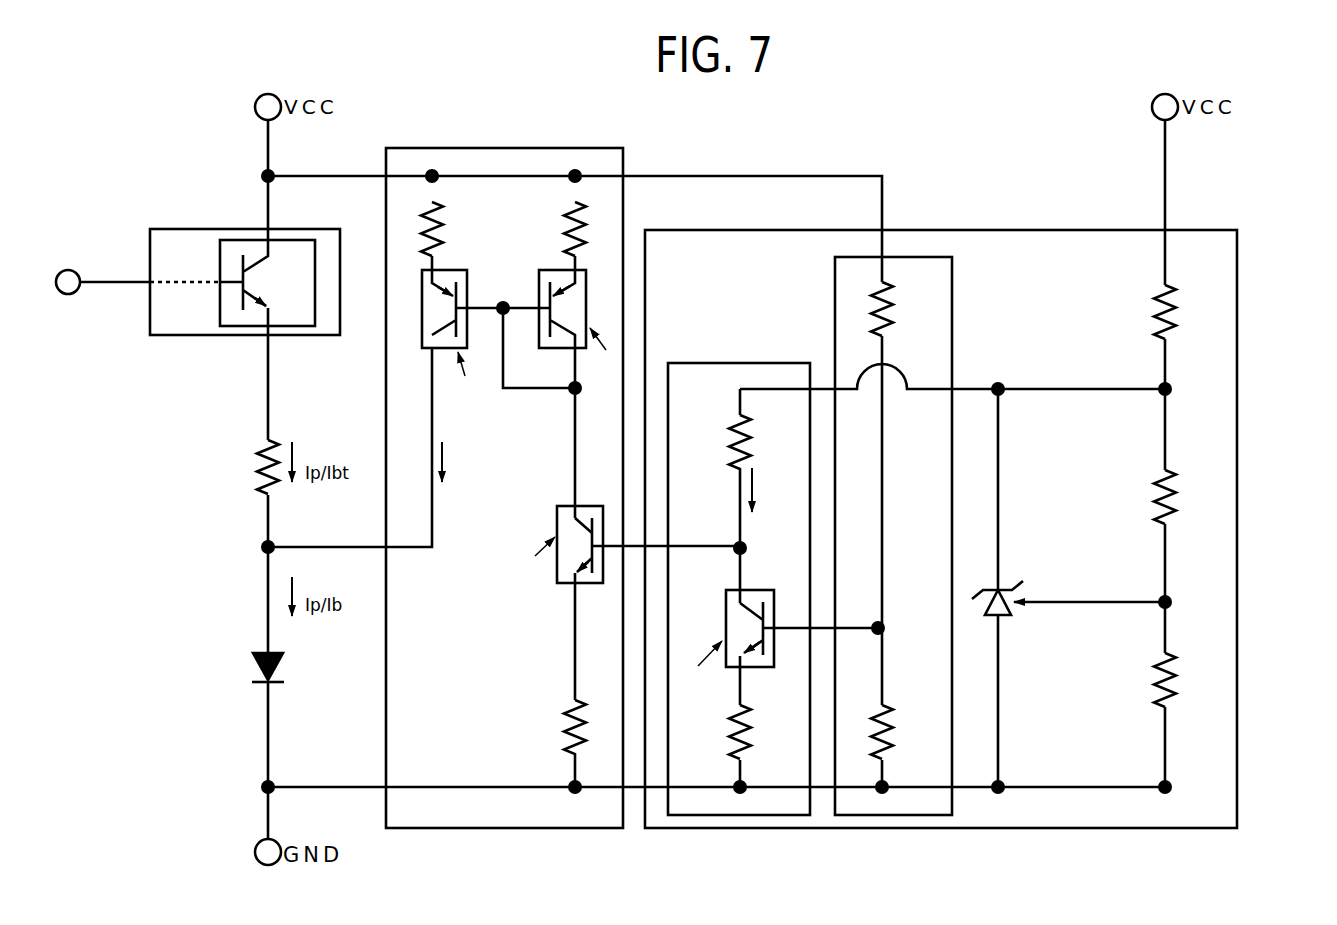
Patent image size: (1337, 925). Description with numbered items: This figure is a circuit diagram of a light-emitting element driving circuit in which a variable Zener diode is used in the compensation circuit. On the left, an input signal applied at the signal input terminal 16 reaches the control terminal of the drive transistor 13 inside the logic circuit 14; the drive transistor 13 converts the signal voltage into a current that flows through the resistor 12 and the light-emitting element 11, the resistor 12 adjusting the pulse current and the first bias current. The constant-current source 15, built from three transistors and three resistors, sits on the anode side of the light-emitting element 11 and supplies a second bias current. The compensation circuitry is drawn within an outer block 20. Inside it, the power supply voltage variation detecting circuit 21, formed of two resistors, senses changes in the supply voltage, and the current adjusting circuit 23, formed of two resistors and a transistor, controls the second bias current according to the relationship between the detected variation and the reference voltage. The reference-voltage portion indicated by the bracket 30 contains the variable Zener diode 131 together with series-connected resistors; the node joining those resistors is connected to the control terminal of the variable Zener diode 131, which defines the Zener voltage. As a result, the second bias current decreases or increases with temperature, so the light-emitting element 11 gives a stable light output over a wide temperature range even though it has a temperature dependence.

The light-emitting element 11 is at (252, 667).
The resistor 12 is at (246, 468).
The drive transistor 13 is at (217, 304).
The logic circuit 14 is at (196, 228).
The constant-current source 15 is at (486, 146).
The signal input terminal 16 is at (70, 268).
The bias voltage generating circuit 20 is at (1237, 276).
The power supply voltage variation detecting circuit 21 is at (906, 255).
The current adjusting circuit 23 is at (709, 818).
The zener voltage dividing circuit 30 is at (1097, 591).
The variable Zener diode 131 is at (1021, 620).